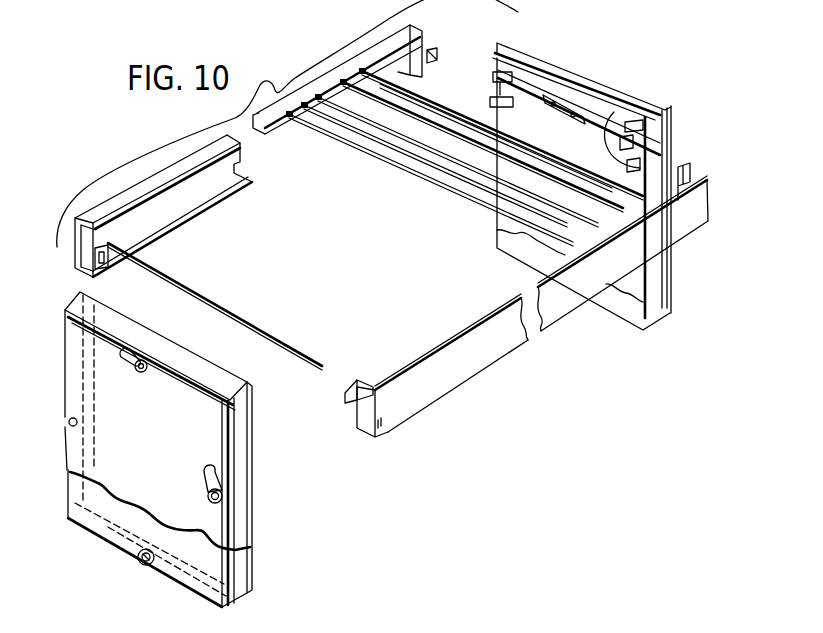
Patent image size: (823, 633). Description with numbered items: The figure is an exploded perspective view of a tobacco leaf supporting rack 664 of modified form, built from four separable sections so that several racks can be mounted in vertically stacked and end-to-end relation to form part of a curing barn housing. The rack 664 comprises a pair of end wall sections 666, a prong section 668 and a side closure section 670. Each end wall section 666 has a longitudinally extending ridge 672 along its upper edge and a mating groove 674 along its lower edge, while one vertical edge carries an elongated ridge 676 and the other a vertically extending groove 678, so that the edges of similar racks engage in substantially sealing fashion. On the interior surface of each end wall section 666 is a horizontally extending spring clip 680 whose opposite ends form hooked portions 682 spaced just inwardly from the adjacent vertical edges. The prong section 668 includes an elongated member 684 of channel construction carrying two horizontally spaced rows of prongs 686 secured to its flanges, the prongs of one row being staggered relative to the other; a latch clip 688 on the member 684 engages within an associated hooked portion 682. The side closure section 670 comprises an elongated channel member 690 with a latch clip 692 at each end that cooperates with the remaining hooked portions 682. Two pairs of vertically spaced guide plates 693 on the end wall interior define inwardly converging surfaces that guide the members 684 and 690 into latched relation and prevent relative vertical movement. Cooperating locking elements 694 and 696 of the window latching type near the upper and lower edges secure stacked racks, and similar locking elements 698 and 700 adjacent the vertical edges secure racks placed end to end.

The rack 664 is at (778, 122).
The end wall section 666 is at (540, 127).
The prong section 668 is at (183, 167).
The side closure section 670 is at (440, 374).
The ridge 672 is at (590, 75).
The groove 674 is at (110, 550).
The ridge 676 is at (665, 268).
The groove 678 is at (66, 382).
The spring clip 680 is at (568, 112).
The hooked portion 682 is at (480, 88).
The elongated member 684 is at (208, 193).
The prong 686 is at (403, 135).
The latch clip 688 is at (437, 50).
The elongated member 690 is at (552, 303).
The latch clip 692 is at (345, 395).
The guide plate 693 is at (505, 104).
The locking element 694 is at (141, 373).
The locking element 696 is at (140, 564).
The locking element 698 is at (201, 496).
The locking element 700 is at (80, 424).